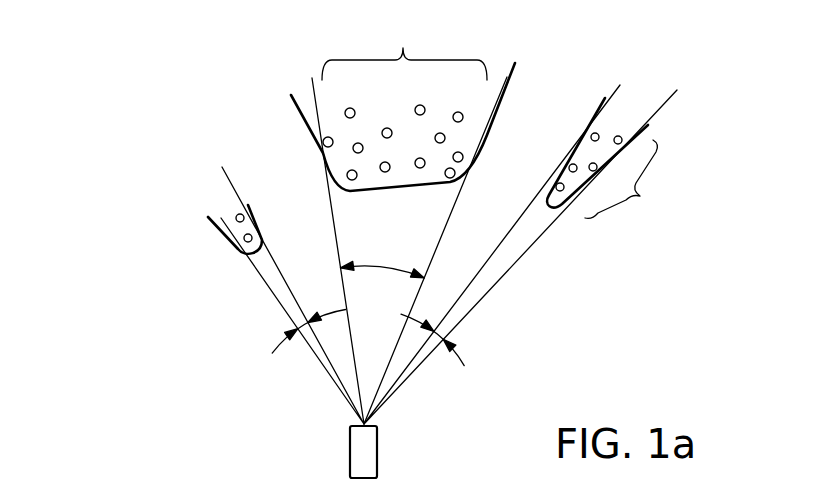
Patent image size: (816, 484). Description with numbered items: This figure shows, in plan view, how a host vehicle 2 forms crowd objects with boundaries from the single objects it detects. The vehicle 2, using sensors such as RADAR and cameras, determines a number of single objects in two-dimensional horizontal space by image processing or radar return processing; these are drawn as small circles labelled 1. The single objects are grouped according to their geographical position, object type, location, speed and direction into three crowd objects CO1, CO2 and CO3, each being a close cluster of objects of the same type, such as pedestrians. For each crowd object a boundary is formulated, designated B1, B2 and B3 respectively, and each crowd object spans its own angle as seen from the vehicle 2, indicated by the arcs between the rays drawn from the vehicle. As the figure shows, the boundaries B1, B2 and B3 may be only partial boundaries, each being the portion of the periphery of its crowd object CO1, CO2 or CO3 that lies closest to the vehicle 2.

The nozzle / spray pattern 1 is at (242, 252).
The host vehicle 2 is at (350, 442).
The boundary of first crowd object B1 is at (252, 215).
The boundary of second crowd object B2 is at (503, 107).
The boundary of third crowd object B3 is at (648, 125).
The first crowd object CO1 is at (205, 238).
The second crowd object CO2 is at (404, 44).
The third crowd object CO3 is at (640, 185).